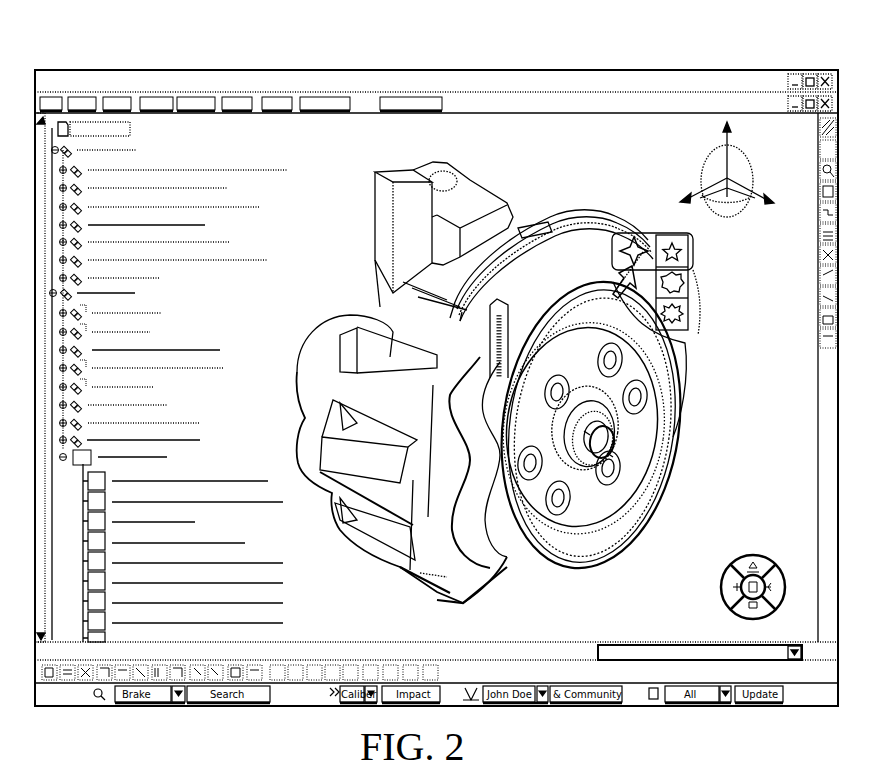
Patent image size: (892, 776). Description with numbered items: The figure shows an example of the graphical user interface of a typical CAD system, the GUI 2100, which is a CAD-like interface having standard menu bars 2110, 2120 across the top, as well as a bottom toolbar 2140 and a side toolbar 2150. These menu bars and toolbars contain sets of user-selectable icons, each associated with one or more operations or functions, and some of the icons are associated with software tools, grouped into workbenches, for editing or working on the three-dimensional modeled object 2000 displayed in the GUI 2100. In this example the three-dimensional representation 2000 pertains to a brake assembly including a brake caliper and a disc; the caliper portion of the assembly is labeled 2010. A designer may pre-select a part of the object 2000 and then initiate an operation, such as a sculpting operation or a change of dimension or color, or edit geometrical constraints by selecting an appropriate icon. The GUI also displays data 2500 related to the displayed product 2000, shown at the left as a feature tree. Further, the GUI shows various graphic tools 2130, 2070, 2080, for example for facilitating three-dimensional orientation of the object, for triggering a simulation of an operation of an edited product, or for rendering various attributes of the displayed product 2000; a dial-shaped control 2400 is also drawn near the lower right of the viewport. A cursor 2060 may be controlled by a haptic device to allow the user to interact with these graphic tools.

The 3D modeled object 2000 is at (345, 229).
The brake caliper component 2010 is at (393, 320).
The cursor 2060 is at (686, 335).
The graphic tool 2070 is at (643, 237).
The graphic tool 2080 is at (688, 285).
The GUI 2100 is at (665, 578).
The menu bar 2110 is at (534, 79).
The menu bar 2120 is at (612, 103).
The graphic tool 2130 is at (740, 208).
The bottom toolbar 2140 is at (448, 648).
The side toolbar 2150 is at (818, 367).
The navigation dial 2400 is at (748, 561).
The data 2500 is at (150, 363).